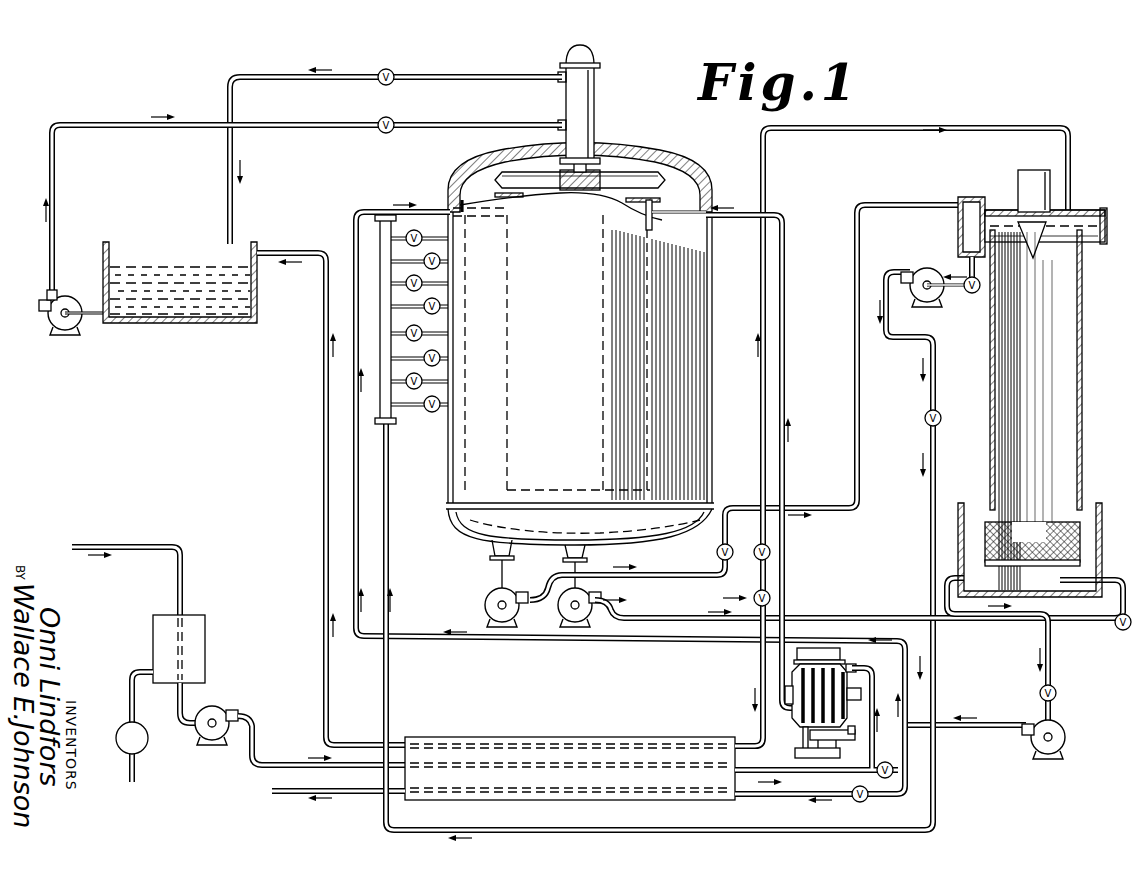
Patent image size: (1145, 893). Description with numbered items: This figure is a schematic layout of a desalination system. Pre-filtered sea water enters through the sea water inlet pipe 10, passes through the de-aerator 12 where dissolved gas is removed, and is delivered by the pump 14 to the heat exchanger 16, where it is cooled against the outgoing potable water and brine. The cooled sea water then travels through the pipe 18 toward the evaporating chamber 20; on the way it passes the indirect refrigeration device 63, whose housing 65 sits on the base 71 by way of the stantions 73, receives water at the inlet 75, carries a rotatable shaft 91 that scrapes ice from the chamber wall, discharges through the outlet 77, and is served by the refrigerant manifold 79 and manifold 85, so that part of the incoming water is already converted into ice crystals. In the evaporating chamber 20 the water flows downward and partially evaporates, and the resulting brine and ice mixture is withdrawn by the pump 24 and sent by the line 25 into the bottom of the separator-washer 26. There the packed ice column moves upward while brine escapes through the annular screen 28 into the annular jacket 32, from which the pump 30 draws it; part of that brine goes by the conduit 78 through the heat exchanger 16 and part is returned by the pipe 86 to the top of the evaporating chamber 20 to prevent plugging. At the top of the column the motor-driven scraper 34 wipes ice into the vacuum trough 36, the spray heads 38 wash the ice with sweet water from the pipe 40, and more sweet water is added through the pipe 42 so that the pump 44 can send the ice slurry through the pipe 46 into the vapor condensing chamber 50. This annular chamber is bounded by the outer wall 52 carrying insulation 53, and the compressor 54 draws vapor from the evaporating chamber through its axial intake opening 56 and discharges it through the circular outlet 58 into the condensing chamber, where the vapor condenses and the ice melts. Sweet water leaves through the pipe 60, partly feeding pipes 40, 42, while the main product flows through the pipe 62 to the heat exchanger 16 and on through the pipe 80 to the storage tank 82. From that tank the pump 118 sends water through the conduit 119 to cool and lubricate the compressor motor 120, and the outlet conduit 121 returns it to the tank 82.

The sea water inlet pipe 10 is at (135, 540).
The de-aerator 12 is at (205, 628).
The pump 14 is at (214, 710).
The heat exchanger 16 is at (510, 735).
The pipe 18 is at (740, 225).
The evaporating chamber 20 is at (569, 329).
The pump 24 is at (590, 632).
The line 25 is at (685, 605).
The separator-washer 26 is at (1082, 380).
The annular screen 28 is at (1070, 532).
The pump 30 is at (1066, 735).
The annular jacket 32 is at (1100, 550).
The motor-driven scraper 34 is at (1105, 226).
The vacuum trough 36 is at (958, 236).
The spray heads 38 is at (1060, 222).
The pipe 40 is at (1013, 130).
The pipe 42 is at (948, 208).
The pump 44 is at (930, 302).
The pipe 46 is at (392, 452).
The vapor condensing chamber 50 is at (470, 450).
The outer wall 52 is at (450, 195).
The insulation 53 is at (665, 158).
The compressor 54 is at (615, 172).
The axial intake opening 56 is at (548, 196).
The circular outlet 58 is at (470, 190).
The pipe 60 is at (498, 572).
The pipe 62 is at (760, 666).
The indirect refrigeration device 63 is at (850, 664).
The housing 65 is at (812, 660).
The base 71 is at (795, 752).
The stantions 73 is at (822, 795).
The inlet 75 is at (852, 668).
The outlet 77 is at (795, 718).
The conduit 78 is at (285, 795).
The manifold 79 is at (817, 706).
The pipe 80 is at (323, 550).
The storage tank 82 is at (190, 333).
The manifold 85 is at (845, 740).
The pipe 86 is at (437, 208).
The rotatable shaft 91 is at (858, 694).
The pump 118 is at (48, 326).
The conduit 119 is at (55, 180).
The compressor motor 120 is at (594, 105).
The outlet conduit 121 is at (458, 78).